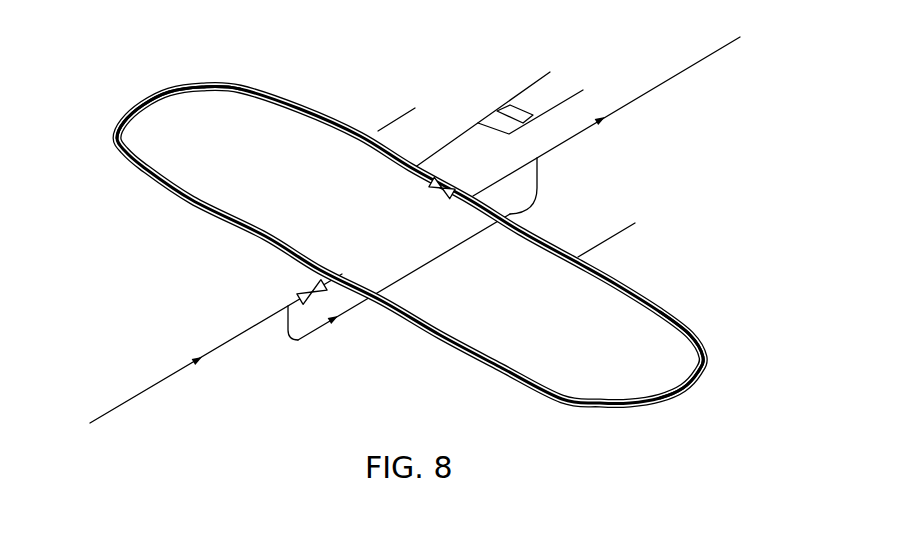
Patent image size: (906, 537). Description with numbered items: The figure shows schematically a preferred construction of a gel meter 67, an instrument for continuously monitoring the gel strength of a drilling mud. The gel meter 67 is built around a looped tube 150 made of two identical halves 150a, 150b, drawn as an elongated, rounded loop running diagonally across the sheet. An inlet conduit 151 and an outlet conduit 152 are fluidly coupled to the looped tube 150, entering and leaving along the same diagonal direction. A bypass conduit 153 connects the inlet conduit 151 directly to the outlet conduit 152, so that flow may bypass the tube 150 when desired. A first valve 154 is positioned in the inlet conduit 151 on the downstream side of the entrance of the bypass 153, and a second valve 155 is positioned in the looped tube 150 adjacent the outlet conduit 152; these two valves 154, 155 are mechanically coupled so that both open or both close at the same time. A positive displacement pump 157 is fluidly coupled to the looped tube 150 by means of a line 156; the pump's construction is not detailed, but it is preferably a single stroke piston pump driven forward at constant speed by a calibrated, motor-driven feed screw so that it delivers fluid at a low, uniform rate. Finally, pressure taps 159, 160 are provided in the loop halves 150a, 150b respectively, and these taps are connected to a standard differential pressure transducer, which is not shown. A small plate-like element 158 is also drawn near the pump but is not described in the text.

The gel meter 67 is at (302, 76).
The looped tube 150 is at (679, 296).
The loop half 150a is at (241, 85).
The loop half 150b is at (707, 366).
The inlet conduit 151 is at (190, 368).
The outlet conduit 152 is at (690, 70).
The bypass conduit 153 is at (312, 332).
The first valve 154 is at (303, 290).
The second valve 155 is at (450, 184).
The line 156 is at (448, 152).
The positive displacement pump 157 is at (562, 73).
The plate 158 is at (535, 117).
The pressure tap 159 is at (378, 130).
The pressure tap 160 is at (614, 231).